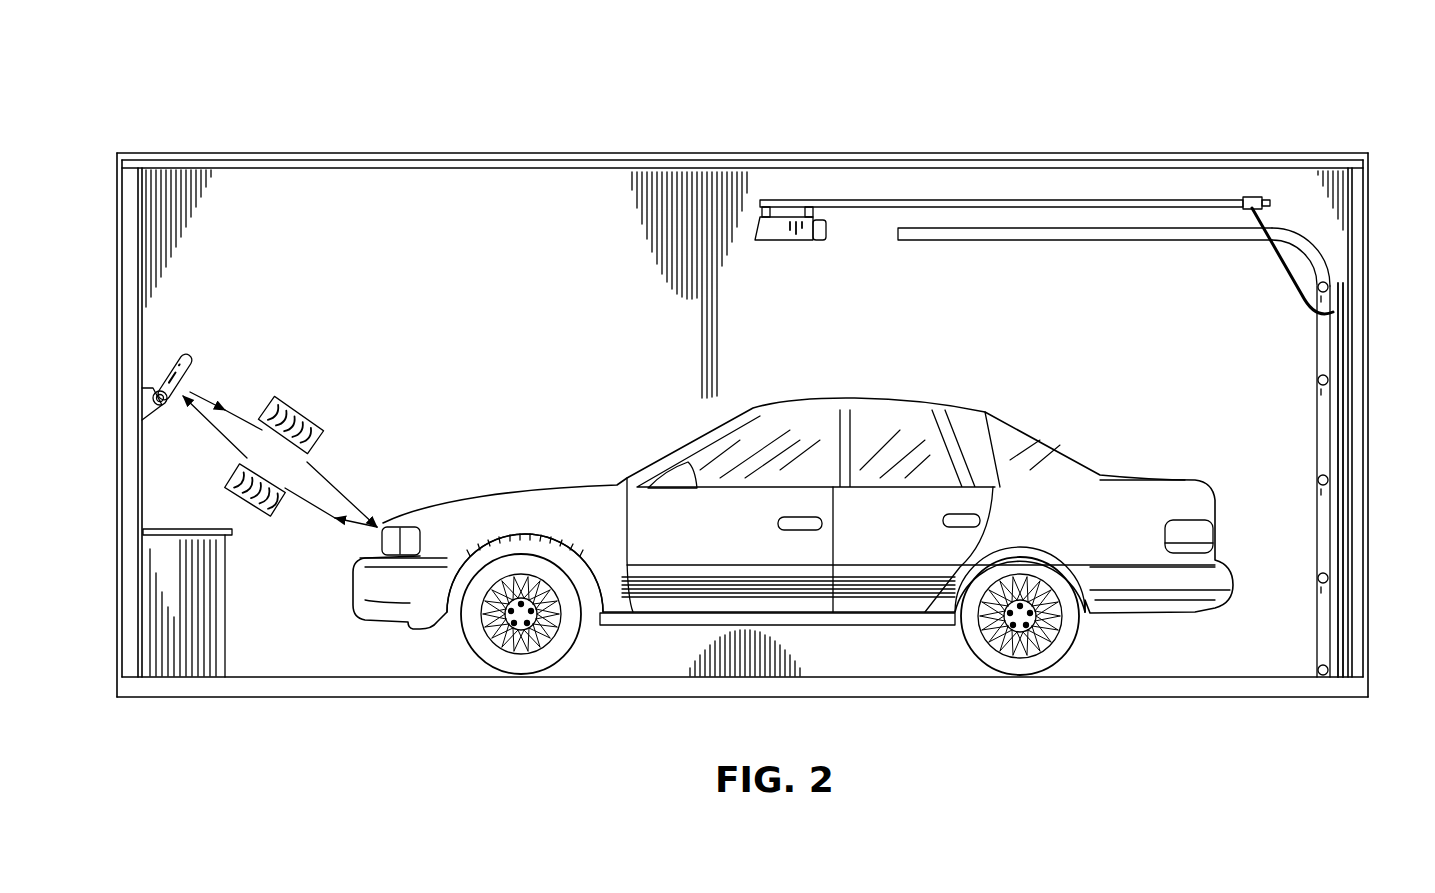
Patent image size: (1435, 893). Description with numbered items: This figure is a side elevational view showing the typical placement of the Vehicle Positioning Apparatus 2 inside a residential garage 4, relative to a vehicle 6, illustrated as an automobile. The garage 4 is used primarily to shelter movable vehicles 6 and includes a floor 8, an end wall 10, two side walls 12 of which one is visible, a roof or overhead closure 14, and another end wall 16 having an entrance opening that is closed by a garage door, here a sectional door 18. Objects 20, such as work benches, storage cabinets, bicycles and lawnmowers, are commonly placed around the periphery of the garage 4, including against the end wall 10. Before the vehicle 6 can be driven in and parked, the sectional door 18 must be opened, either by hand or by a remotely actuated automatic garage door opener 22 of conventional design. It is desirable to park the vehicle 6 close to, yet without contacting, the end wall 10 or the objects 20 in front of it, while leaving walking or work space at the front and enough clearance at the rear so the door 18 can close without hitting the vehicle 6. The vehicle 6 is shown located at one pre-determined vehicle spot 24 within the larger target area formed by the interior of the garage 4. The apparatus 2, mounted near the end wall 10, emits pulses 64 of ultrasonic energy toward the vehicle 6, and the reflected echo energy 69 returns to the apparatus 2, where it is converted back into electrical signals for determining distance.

The Vehicle Positioning Apparatus 2 is at (190, 333).
The residential garage 4 is at (822, 104).
The vehicle 6 is at (833, 392).
The floor 8 is at (1185, 677).
The end wall 10 is at (130, 268).
The side wall 12 is at (418, 271).
The roof or overhead closure 14 is at (520, 153).
The end wall 16 is at (1362, 205).
The sectional door 18 is at (1325, 438).
The objects 20 is at (175, 603).
The automatic garage door opener 22 is at (781, 242).
The pre-determined vehicle spot 24 is at (511, 686).
The pulses of ultrasonic energy 64 is at (296, 424).
The reflected echo energy 69 is at (254, 505).